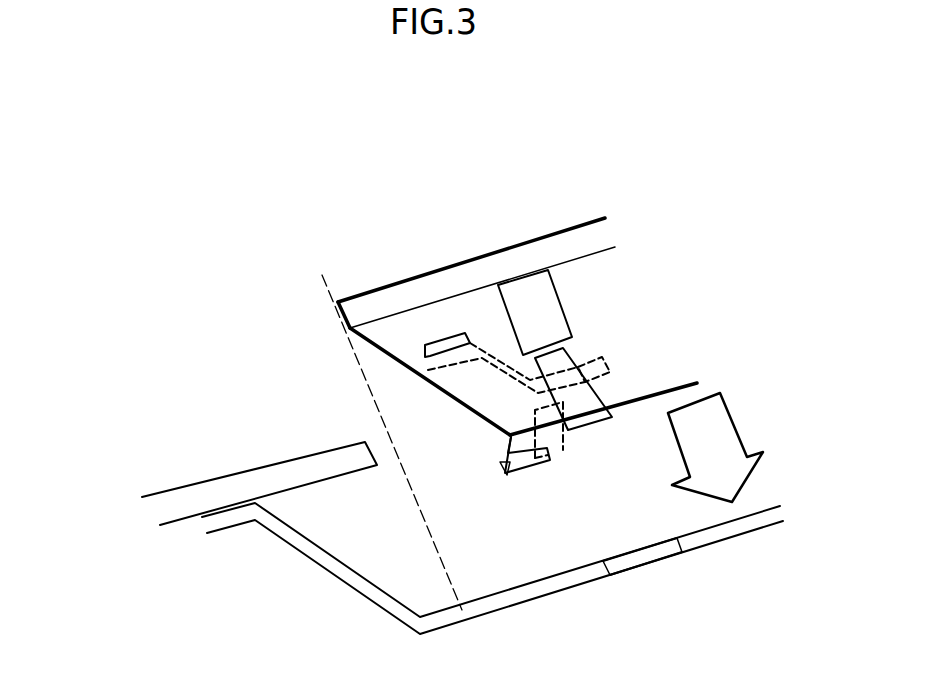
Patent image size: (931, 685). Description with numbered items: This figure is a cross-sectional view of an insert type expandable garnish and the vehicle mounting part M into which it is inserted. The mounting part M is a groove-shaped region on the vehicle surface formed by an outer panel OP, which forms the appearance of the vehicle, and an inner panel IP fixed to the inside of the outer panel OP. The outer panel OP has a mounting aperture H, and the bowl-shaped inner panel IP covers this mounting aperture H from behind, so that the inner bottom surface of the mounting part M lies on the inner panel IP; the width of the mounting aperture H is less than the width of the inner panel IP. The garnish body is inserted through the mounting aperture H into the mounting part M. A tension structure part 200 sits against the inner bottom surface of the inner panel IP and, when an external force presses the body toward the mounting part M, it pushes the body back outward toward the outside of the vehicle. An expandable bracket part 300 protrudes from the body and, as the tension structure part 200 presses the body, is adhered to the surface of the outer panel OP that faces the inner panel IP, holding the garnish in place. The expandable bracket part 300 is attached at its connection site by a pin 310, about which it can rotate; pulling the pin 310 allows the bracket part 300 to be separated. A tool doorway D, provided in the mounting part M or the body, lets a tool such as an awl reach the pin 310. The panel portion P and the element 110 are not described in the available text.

The mounting plate 110 is at (658, 359).
The tool doorway D is at (542, 305).
The expandable bracket part 300 is at (494, 388).
The pin 310 is at (582, 402).
The tension structure part 200 is at (500, 454).
The mounting aperture H is at (413, 409).
The mounting part M is at (242, 315).
The outer panel OP is at (210, 492).
The inner panel IP is at (330, 567).
The panel portion P is at (656, 554).